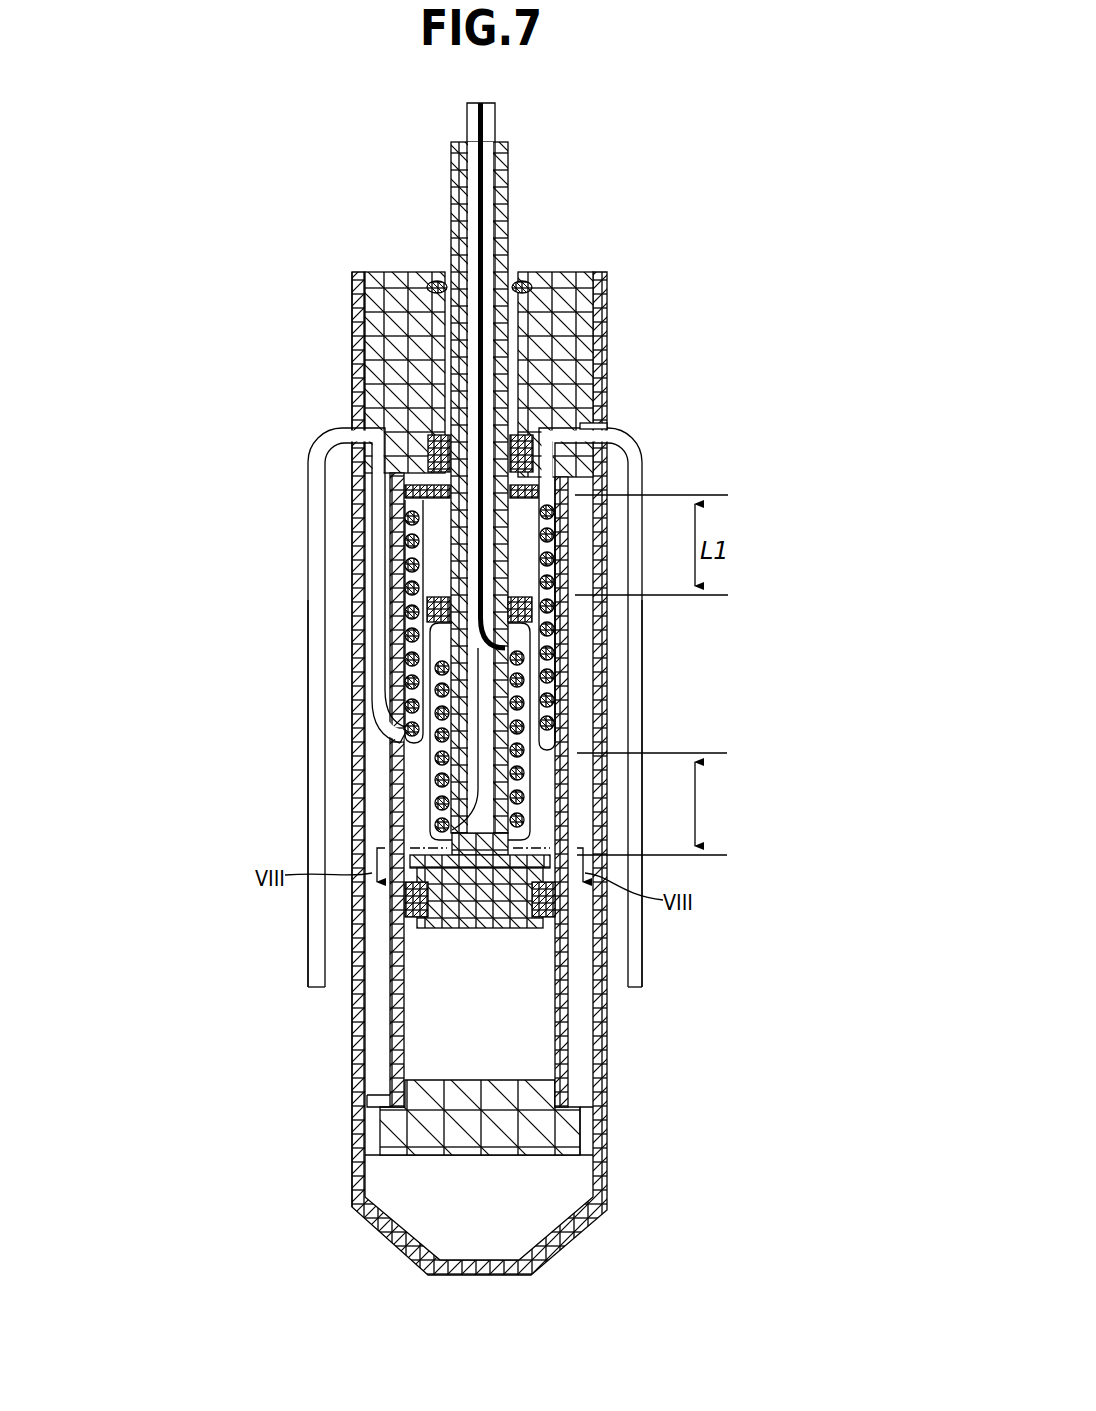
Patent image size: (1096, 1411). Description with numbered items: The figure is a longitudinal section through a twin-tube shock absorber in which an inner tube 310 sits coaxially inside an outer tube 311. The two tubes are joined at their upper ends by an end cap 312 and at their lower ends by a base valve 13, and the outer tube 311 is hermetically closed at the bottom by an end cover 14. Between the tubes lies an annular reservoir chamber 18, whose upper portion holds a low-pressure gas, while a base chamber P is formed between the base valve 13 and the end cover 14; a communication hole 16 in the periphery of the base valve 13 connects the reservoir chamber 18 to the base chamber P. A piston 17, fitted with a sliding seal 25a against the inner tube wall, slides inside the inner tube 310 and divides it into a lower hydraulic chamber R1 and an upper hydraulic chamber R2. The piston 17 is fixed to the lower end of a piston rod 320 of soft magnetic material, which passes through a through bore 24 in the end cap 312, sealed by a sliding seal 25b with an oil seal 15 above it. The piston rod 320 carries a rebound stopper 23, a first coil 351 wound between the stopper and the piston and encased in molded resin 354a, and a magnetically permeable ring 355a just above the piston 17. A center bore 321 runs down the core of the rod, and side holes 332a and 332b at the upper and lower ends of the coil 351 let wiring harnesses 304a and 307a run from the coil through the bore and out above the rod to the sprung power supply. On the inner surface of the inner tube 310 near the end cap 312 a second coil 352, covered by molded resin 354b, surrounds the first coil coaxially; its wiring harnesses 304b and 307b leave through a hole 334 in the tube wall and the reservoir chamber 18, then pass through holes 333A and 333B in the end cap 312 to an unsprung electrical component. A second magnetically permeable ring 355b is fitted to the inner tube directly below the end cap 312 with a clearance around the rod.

The wiring harness 307a is at (467, 125).
The wiring harness 304a is at (495, 122).
The oil seal 15 is at (440, 287).
The end cap 312 is at (388, 347).
The through bore 24 is at (513, 320).
The through hole 333A is at (356, 418).
The through hole 333B is at (590, 425).
The sliding seal 25b is at (430, 455).
The magnetically permeable ring 355b is at (430, 492).
The coil 352 is at (410, 560).
The rebound stopper 23 is at (437, 610).
The side hole 332a is at (553, 640).
The molded resin 354a is at (438, 672).
The hole 334 is at (395, 715).
The coil 351 is at (405, 742).
The molded resin 354b is at (545, 717).
The reservoir chamber 18 is at (580, 740).
The side hole 332b is at (427, 790).
The upper hydraulic chamber R2 is at (413, 818).
The magnetically permeable ring 355a is at (420, 855).
The sliding seal 25a is at (410, 897).
The wiring harness 307b is at (308, 970).
The wiring harness 304b is at (642, 947).
The center bore 321 is at (482, 817).
The piston rod 320 is at (467, 850).
The piston 17 is at (512, 912).
The lower hydraulic chamber R1 is at (533, 1057).
The outer tube 311 is at (352, 1075).
The inner tube 310 is at (392, 1093).
The communication hole 16 is at (587, 1137).
The base chamber P is at (397, 1198).
The base valve 13 is at (463, 1132).
The end cover 14 is at (587, 1233).